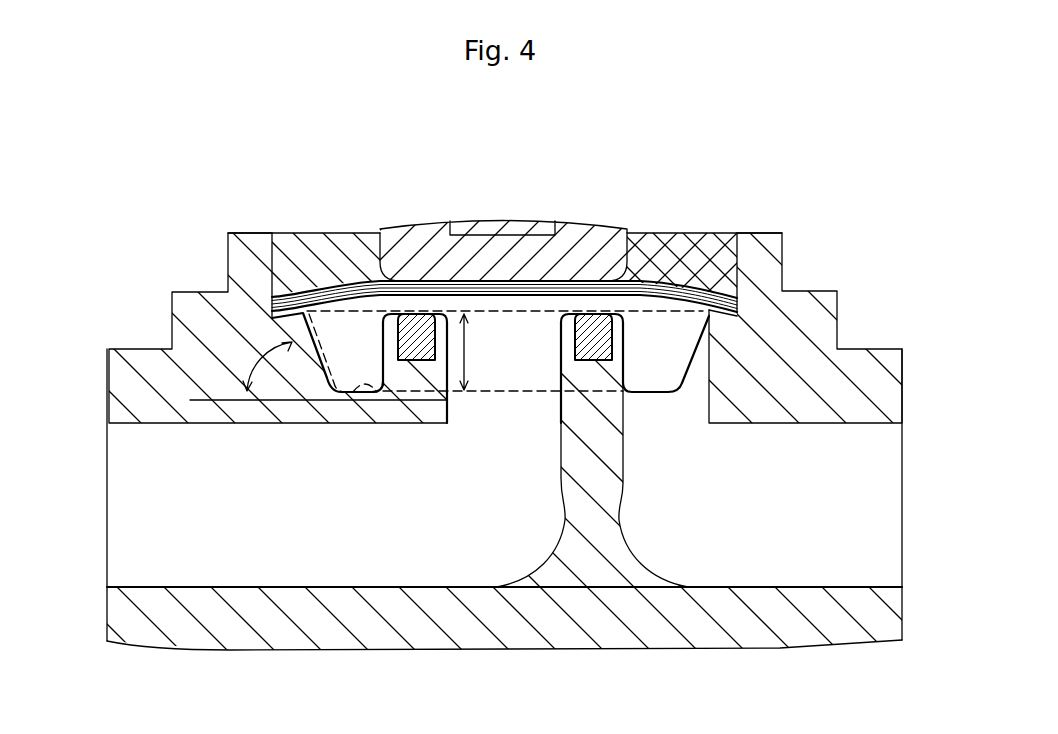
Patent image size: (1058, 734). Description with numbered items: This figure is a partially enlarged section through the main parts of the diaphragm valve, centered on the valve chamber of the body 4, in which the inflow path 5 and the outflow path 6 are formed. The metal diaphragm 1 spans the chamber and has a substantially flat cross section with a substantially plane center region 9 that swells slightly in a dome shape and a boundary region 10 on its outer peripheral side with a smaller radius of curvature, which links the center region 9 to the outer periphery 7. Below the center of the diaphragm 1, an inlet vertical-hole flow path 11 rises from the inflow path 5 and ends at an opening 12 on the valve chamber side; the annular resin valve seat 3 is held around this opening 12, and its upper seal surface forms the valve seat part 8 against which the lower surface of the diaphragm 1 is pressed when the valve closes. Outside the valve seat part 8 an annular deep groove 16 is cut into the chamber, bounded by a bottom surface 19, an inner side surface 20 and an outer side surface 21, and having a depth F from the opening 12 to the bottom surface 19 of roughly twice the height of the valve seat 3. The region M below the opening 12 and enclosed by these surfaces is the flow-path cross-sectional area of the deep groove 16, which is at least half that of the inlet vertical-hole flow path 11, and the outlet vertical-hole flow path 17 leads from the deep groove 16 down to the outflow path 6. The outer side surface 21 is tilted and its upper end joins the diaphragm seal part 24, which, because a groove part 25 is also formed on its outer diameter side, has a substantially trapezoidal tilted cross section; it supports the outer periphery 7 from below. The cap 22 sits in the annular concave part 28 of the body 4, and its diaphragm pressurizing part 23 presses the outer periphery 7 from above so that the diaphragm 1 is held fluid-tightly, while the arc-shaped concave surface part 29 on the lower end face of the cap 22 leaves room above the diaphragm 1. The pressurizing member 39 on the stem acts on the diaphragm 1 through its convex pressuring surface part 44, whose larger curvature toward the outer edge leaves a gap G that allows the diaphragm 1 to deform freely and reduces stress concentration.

The diaphragm 1 is at (455, 281).
The valve seat 3 is at (603, 340).
The body 4 is at (186, 641).
The inflow path 5 is at (135, 587).
The outflow path 6 is at (863, 587).
The outer periphery 7 is at (783, 240).
The valve seat part 8 is at (627, 318).
The center region 9 is at (520, 283).
The boundary region 10 is at (697, 252).
The inlet vertical-hole flow path 11 is at (562, 364).
The opening 12 is at (568, 312).
The deep groove 16 is at (663, 358).
The outlet vertical-hole flow path 17 is at (705, 397).
The bottom surface 19 is at (406, 362).
The inner side surface 20 is at (443, 340).
The outer side surface 21 is at (327, 345).
The cap 22 is at (292, 235).
The diaphragm pressurizing part 23 is at (270, 314).
The diaphragm seal part 24 is at (247, 235).
The groove part 25 is at (737, 316).
The annular concave part 28 is at (737, 233).
The concave surface part 29 is at (343, 290).
The pressurizing member 39 is at (415, 232).
The pressuring surface part 44 is at (619, 282).
The gap G is at (655, 280).
The depth F is at (466, 336).
The region M is at (362, 394).